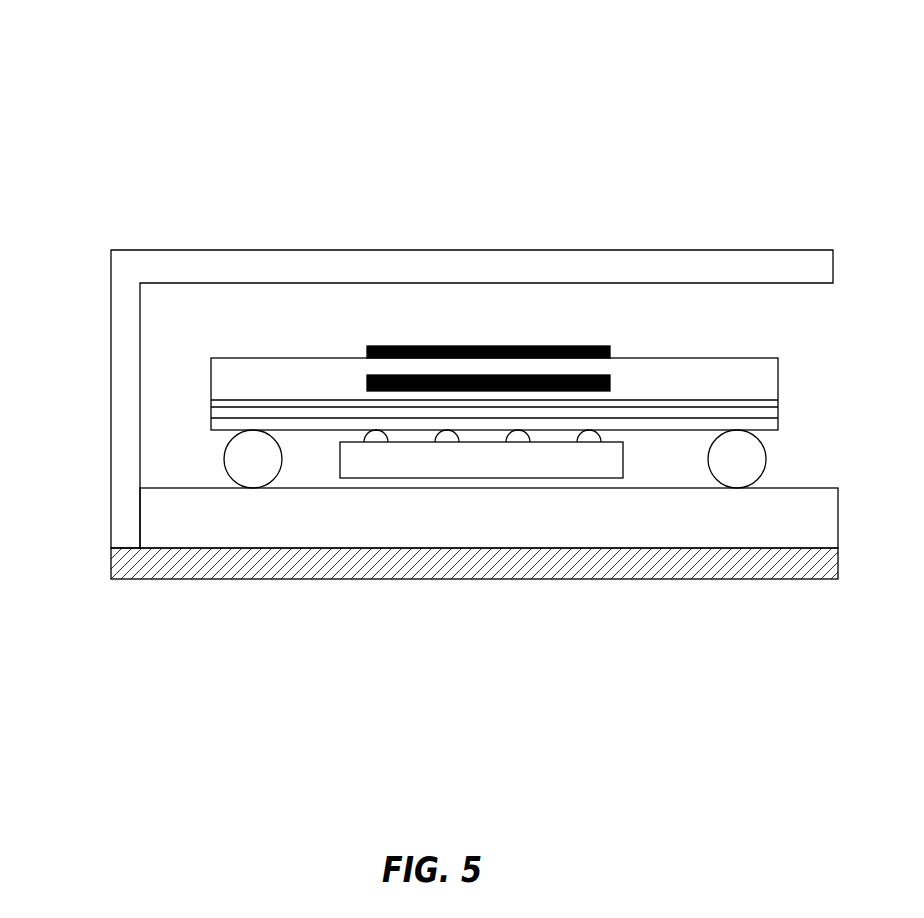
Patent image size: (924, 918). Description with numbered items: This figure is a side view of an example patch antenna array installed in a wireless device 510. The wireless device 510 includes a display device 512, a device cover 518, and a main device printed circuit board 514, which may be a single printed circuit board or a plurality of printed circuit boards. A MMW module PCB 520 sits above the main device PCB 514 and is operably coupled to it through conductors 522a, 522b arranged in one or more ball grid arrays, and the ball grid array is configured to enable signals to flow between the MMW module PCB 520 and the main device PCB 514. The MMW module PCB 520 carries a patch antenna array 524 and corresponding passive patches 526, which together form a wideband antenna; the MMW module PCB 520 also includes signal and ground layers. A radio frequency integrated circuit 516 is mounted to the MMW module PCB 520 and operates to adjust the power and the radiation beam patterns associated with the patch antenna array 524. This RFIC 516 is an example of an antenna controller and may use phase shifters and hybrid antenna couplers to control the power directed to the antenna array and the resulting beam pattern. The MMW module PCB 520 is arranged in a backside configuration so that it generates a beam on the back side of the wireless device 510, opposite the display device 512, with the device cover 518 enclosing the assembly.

The wireless device 510 is at (745, 84).
The display device 512 is at (172, 580).
The main device printed circuit board 514 is at (830, 527).
The radio frequency integrated circuit 516 is at (626, 465).
The device cover 518 is at (179, 249).
The MMW module PCB 520 is at (778, 390).
The conductor 522a is at (223, 463).
The conductor 522b is at (766, 463).
The patch antenna array 524 is at (367, 389).
The passive patches 526 is at (367, 353).